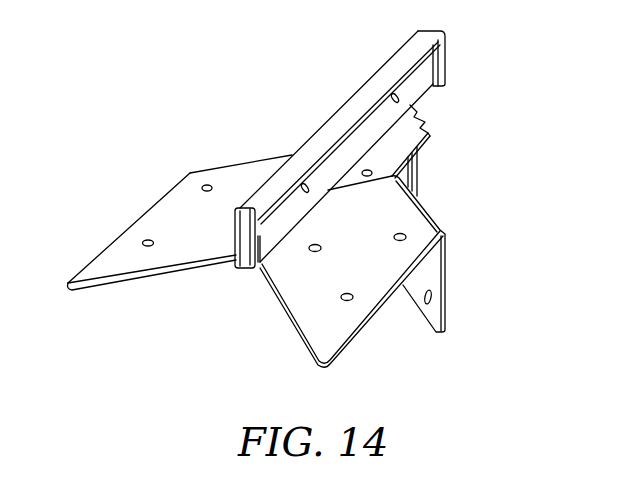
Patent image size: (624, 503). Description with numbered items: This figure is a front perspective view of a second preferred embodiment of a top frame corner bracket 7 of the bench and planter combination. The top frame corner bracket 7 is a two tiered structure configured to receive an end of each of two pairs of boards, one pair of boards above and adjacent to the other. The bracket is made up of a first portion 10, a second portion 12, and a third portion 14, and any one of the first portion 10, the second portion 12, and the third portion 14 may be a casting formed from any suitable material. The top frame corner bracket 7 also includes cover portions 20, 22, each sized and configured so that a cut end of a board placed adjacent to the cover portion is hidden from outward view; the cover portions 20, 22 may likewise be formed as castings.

The top frame corner bracket 7 is at (204, 97).
The first portion 10 is at (118, 256).
The second portion 12 is at (378, 78).
The third portion 14 is at (410, 128).
The cover portion 20 is at (444, 61).
The cover portion 22 is at (422, 172).